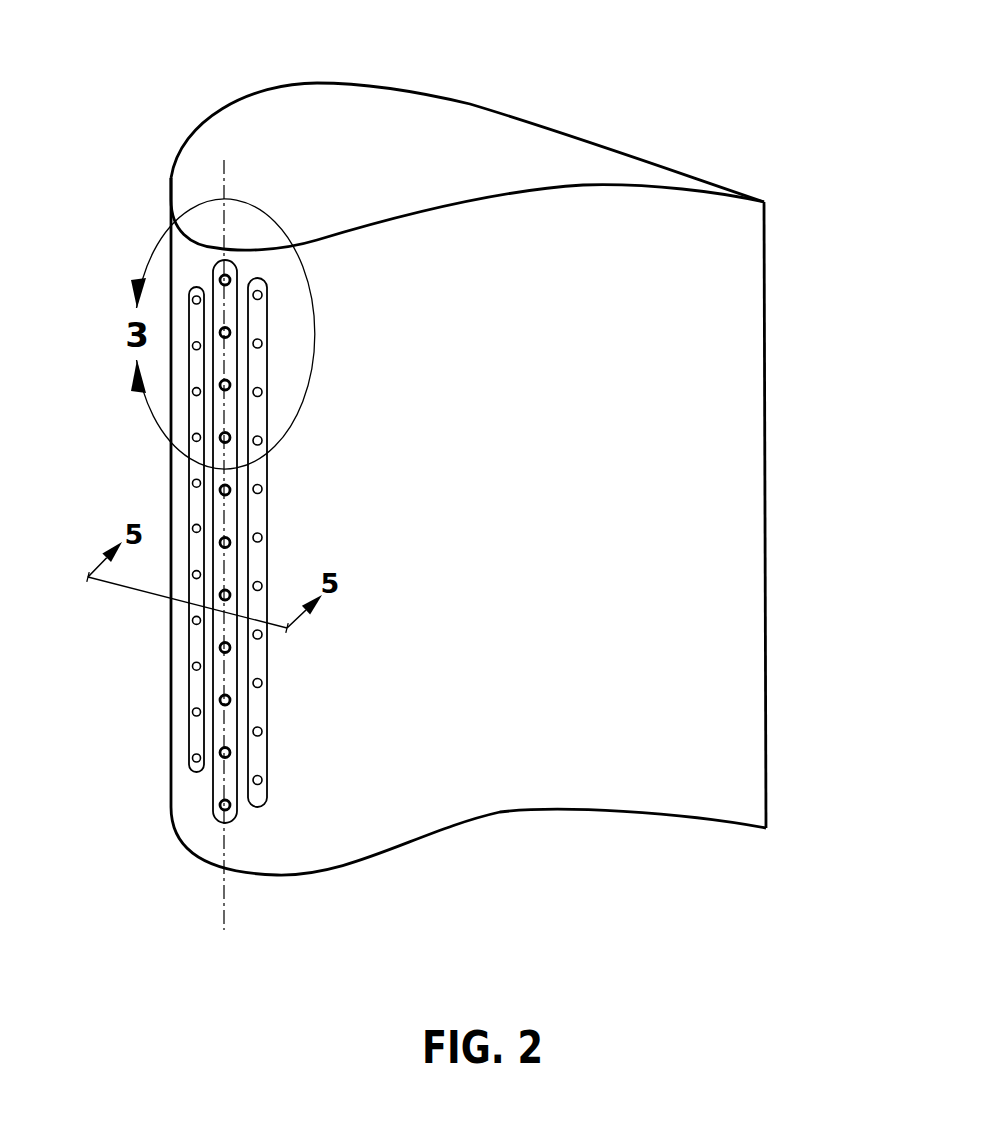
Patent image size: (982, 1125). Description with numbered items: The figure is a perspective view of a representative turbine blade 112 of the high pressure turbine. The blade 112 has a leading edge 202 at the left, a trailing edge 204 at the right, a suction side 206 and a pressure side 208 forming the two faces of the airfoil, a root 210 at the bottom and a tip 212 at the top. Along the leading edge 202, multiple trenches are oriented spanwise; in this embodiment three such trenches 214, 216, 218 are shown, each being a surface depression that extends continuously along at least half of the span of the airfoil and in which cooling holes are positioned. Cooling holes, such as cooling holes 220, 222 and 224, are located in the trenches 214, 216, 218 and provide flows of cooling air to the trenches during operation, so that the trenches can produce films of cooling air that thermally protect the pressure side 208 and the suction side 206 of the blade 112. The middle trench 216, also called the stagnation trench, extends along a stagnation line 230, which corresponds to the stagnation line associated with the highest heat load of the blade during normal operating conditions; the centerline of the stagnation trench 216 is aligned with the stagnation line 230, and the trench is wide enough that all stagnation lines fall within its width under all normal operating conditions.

The blade 112 is at (457, 471).
The leading edge 202 is at (195, 813).
The trailing edge 204 is at (747, 662).
The suction side 206 is at (343, 83).
The pressure side 208 is at (637, 205).
The root 210 is at (410, 840).
The tip 212 is at (467, 130).
The trench 214 is at (132, 500).
The stagnation trench 216 is at (148, 498).
The trench 218 is at (314, 491).
The cooling hole 220 is at (197, 485).
The cooling hole 222 is at (222, 388).
The cooling hole 224 is at (262, 393).
The stagnation line 230 is at (222, 172).